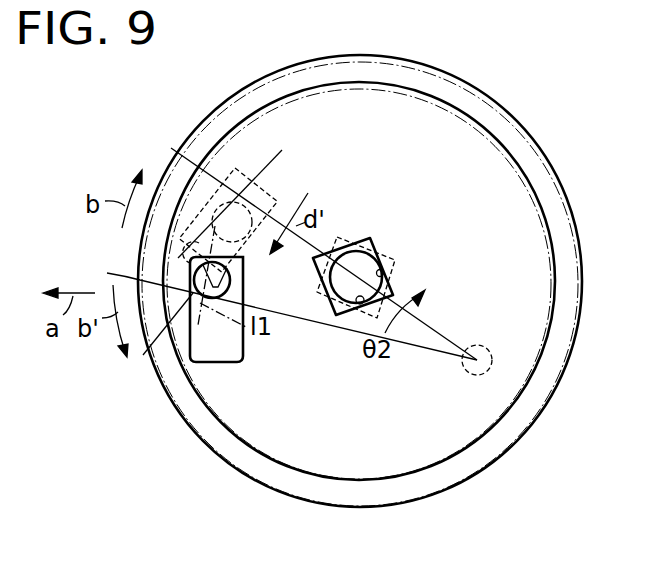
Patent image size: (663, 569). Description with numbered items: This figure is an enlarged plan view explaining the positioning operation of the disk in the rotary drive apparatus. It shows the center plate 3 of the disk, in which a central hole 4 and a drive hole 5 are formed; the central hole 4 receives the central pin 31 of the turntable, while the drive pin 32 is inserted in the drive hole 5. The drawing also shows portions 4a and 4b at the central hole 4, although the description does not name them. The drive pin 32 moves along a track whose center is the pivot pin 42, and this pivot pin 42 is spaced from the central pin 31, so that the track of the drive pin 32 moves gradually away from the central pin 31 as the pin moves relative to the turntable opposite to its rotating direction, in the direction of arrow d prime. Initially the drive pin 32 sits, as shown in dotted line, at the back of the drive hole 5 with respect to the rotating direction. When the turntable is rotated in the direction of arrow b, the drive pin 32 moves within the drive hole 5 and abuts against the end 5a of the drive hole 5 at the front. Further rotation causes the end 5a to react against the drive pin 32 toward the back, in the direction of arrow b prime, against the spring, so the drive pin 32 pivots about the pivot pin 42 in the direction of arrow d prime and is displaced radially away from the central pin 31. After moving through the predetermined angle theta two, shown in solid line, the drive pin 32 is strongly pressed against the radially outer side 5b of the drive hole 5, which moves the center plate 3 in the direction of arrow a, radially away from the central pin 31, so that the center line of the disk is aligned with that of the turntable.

The center plate 3 is at (566, 224).
The central hole 4 is at (325, 305).
The pin 4a is at (385, 272).
The pin 4b is at (358, 308).
The drive hole 5 is at (223, 355).
The end of the drive hole 5a is at (243, 187).
The radially outer side of the drive hole 5b is at (150, 341).
The central pin 31 is at (352, 258).
The drive pin 32 is at (277, 247).
The pivot pin 42 is at (484, 374).